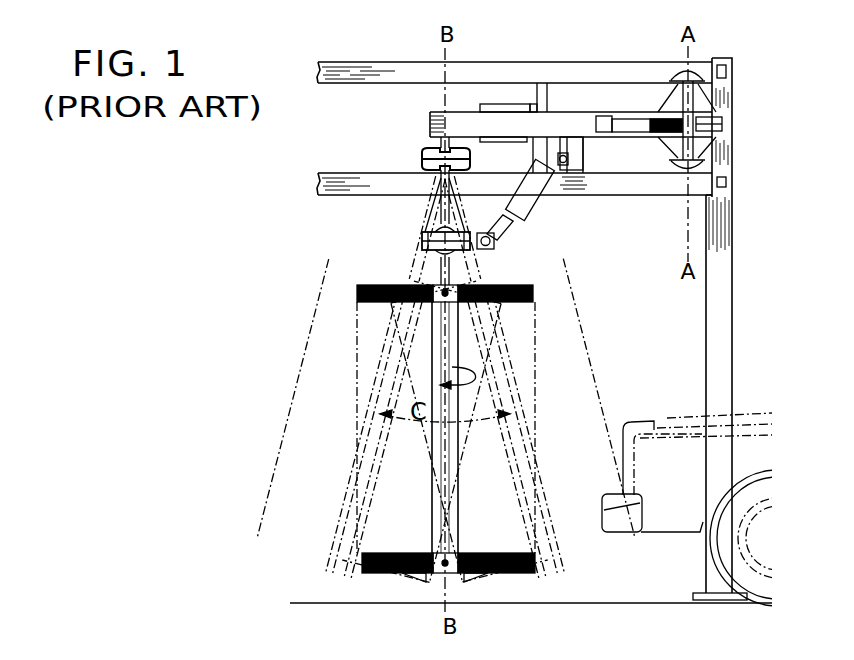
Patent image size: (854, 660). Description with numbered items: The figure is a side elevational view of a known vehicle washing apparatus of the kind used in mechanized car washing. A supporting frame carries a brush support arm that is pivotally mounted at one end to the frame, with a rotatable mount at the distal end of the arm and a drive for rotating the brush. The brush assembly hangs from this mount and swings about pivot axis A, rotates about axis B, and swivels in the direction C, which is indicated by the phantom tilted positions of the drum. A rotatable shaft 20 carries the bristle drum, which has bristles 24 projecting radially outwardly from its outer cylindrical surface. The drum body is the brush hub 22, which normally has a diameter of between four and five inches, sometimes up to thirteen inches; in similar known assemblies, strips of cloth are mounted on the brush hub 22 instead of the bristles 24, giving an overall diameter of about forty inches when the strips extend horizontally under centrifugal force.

The rotatable shaft 20 is at (430, 204).
The brush hub 22 is at (432, 341).
The bristles 24 is at (368, 287).